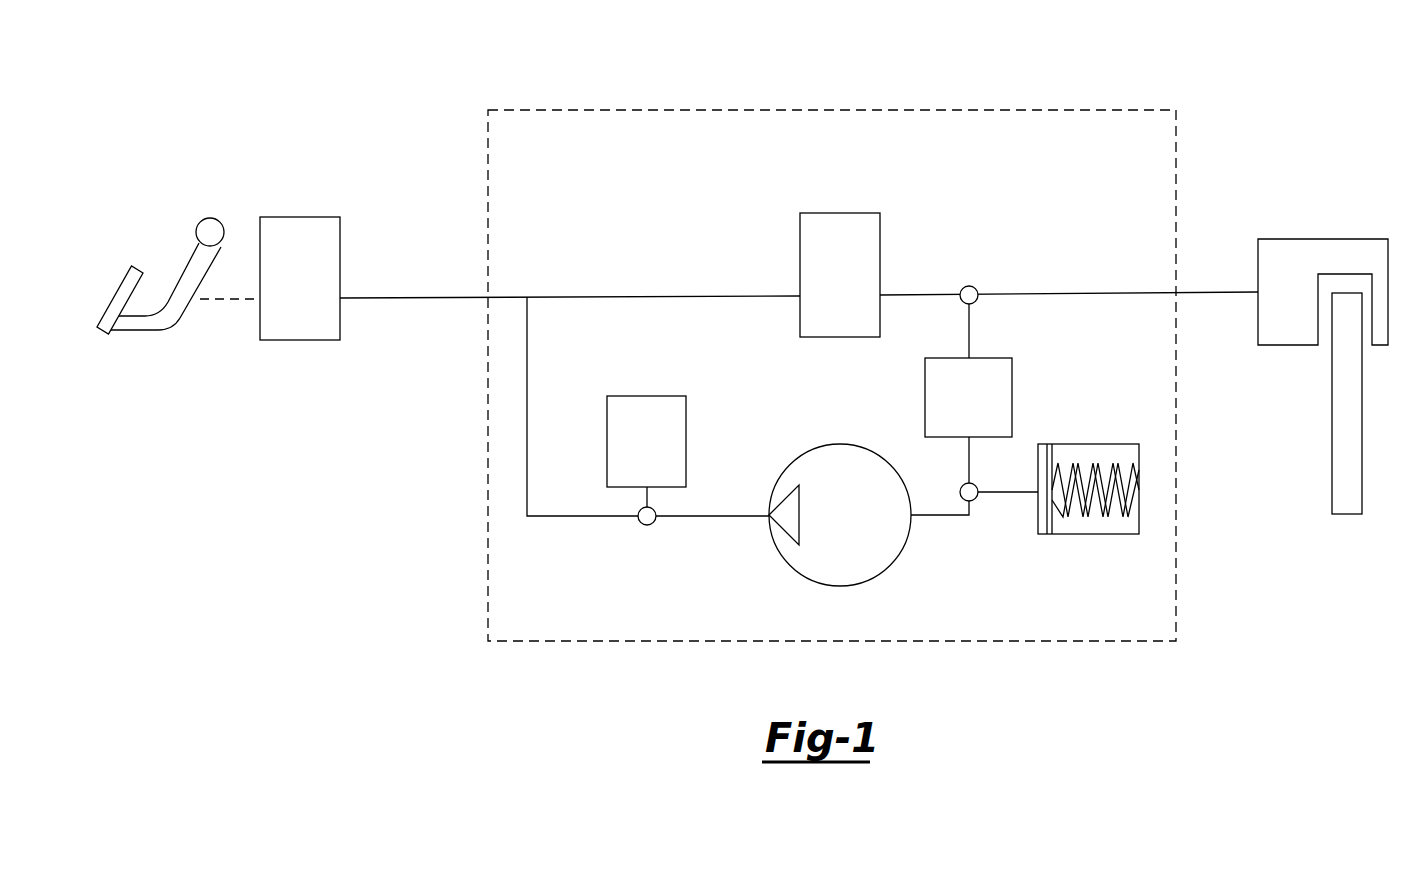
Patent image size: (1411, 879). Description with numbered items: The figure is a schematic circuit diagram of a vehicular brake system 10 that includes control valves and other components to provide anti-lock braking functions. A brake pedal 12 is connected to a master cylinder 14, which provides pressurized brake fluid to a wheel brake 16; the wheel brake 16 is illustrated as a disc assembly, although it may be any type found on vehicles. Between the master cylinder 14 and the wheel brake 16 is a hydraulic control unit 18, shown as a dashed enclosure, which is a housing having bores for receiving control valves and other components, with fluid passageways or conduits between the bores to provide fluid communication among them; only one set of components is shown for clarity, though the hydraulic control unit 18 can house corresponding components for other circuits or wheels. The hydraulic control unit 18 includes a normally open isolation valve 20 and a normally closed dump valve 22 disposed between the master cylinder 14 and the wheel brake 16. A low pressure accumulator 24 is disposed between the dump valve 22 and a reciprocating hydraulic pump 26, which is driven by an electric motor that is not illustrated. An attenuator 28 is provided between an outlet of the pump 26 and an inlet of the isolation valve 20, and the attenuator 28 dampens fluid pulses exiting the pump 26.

The vehicular brake system 10 is at (1177, 108).
The brake pedal 12 is at (117, 334).
The master cylinder 14 is at (307, 216).
The wheel brake 16 is at (1322, 239).
The hydraulic control unit 18 is at (519, 652).
The isolation valve 20 is at (880, 270).
The dump valve 22 is at (1012, 405).
The low pressure accumulator 24 is at (1139, 497).
The reciprocating hydraulic pump 26 is at (883, 570).
The attenuator 28 is at (647, 396).